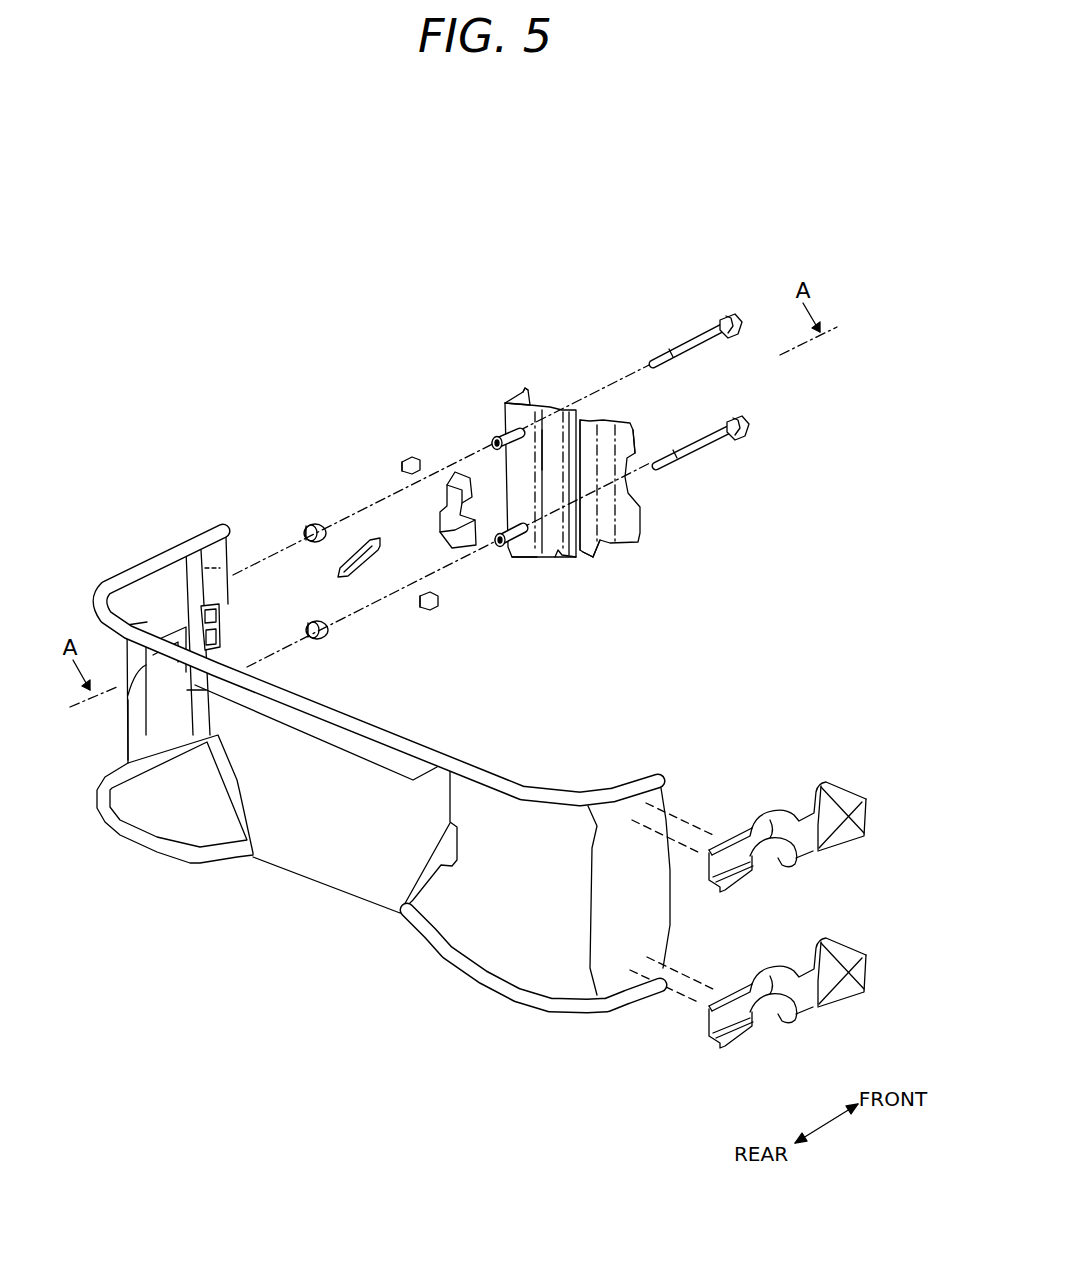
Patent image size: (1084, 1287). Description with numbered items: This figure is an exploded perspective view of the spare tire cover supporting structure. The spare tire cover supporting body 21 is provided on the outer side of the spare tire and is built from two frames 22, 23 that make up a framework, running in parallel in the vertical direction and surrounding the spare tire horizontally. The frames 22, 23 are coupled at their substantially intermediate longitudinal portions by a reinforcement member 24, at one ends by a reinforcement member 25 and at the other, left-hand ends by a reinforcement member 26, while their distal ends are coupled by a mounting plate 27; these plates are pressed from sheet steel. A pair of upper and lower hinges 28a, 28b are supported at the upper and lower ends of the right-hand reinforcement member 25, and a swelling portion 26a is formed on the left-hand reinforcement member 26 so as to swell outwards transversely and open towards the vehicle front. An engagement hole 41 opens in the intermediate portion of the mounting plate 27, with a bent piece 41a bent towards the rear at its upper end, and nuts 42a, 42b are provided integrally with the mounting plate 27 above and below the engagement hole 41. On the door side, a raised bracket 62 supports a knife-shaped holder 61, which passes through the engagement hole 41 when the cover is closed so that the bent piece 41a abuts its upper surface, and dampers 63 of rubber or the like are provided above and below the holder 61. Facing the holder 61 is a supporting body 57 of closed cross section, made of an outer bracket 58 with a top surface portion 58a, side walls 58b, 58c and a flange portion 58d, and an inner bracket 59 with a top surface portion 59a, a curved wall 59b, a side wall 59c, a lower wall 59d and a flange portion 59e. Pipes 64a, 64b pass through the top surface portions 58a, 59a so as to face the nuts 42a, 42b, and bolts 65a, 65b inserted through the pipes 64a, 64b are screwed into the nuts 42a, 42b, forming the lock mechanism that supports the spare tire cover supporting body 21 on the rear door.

The spare tire cover supporting body 21 is at (511, 1011).
The frame 22 is at (510, 777).
The frame 23 is at (437, 953).
The reinforcement member 24 is at (303, 873).
The reinforcement member 25 is at (616, 985).
The reinforcement member 26 is at (127, 760).
The swelling portion 26a is at (128, 740).
The mounting plate 27 is at (235, 522).
The upper hinge 28a is at (867, 807).
The lower hinge 28b is at (867, 965).
The engagement hole 41 is at (220, 640).
The bent piece 41a is at (217, 620).
The nut 42a is at (313, 524).
The nut 42b is at (322, 642).
The supporting body 57 is at (593, 391).
The outer bracket 58 is at (627, 415).
The top surface portion 58a is at (530, 558).
The side wall 58b is at (563, 560).
The side wall 58c is at (522, 392).
The flange portion 58d is at (550, 463).
The inner bracket 59 is at (628, 412).
The top surface portion 59a is at (538, 408).
The curved wall 59b is at (640, 423).
The side wall 59c is at (527, 390).
The lower wall 59d is at (600, 548).
The flange portion 59e is at (596, 554).
The holder 61 is at (360, 543).
The bracket 62 is at (454, 470).
The damper 63 is at (406, 465).
The pipe 64a is at (490, 430).
The pipe 64b is at (507, 557).
The bolt 65a is at (697, 340).
The bolt 65b is at (722, 438).